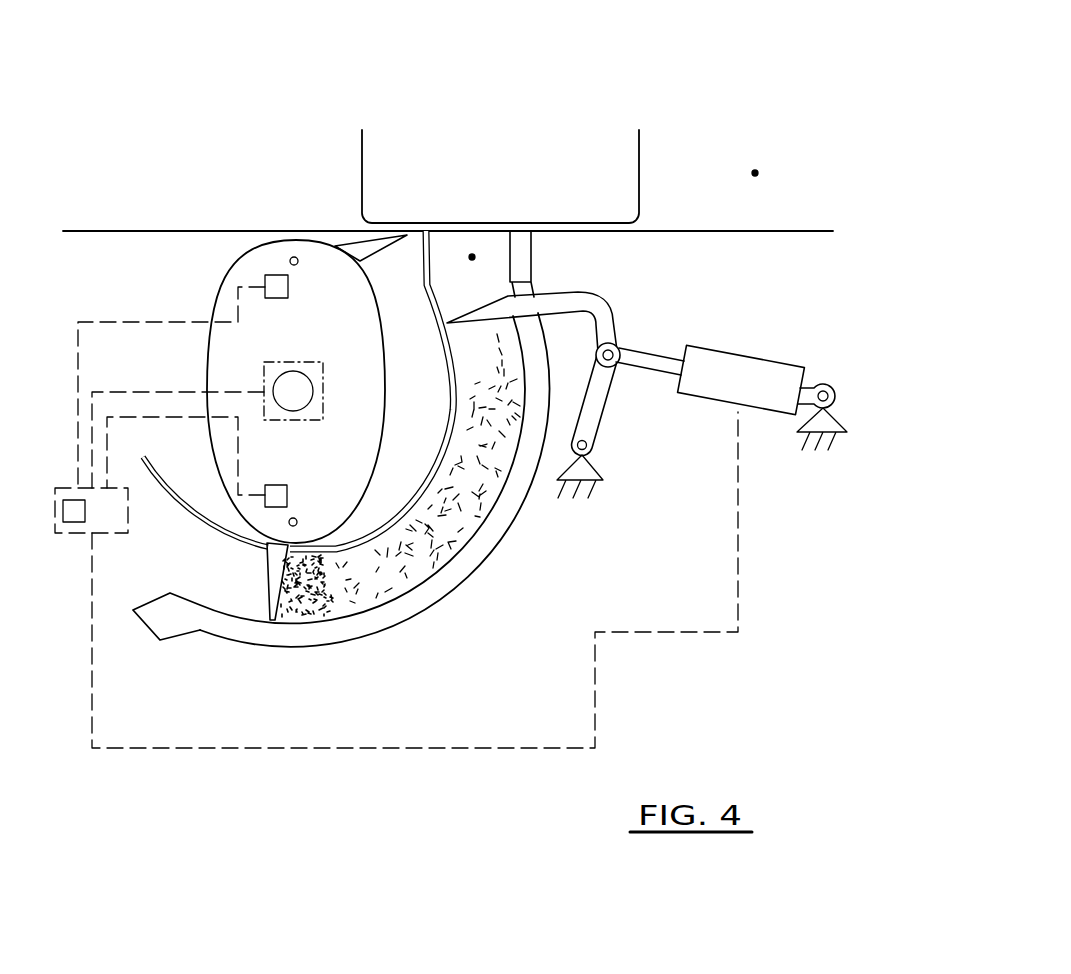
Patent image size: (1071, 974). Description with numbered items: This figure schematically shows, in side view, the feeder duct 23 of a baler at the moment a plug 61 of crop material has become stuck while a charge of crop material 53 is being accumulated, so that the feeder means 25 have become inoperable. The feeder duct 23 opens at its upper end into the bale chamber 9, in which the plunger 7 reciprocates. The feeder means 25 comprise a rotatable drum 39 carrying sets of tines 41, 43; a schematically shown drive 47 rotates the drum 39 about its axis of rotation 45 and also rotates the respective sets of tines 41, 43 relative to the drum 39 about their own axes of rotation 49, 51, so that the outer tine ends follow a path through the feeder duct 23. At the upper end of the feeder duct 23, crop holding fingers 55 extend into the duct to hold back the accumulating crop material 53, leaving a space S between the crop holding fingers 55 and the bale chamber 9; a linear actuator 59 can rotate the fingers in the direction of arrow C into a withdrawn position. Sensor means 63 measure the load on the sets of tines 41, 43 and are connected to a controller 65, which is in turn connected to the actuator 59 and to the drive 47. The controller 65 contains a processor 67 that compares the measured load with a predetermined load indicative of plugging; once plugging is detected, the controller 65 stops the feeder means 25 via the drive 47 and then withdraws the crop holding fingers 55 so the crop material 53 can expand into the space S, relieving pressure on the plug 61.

The plunger 7 is at (617, 158).
The bale chamber 9 is at (756, 170).
The feeder duct 23 is at (418, 626).
The feeder means 25 is at (178, 293).
The rotatable drum 39 is at (213, 357).
The tines 41 is at (270, 575).
The tines 43 is at (366, 247).
The axis of rotation 45 is at (302, 390).
The drive 47 is at (313, 362).
The axis of rotation 49 is at (298, 522).
The axis of rotation 51 is at (298, 263).
The crop material 53 is at (492, 503).
The crop holding fingers 55 is at (588, 312).
The linear actuator 59 is at (733, 368).
The plug of crop material 61 is at (310, 636).
The sensor means 63 is at (278, 299).
The controller 65 is at (115, 527).
The processor 67 is at (73, 520).
The space S is at (473, 254).
The arrow C is at (645, 276).